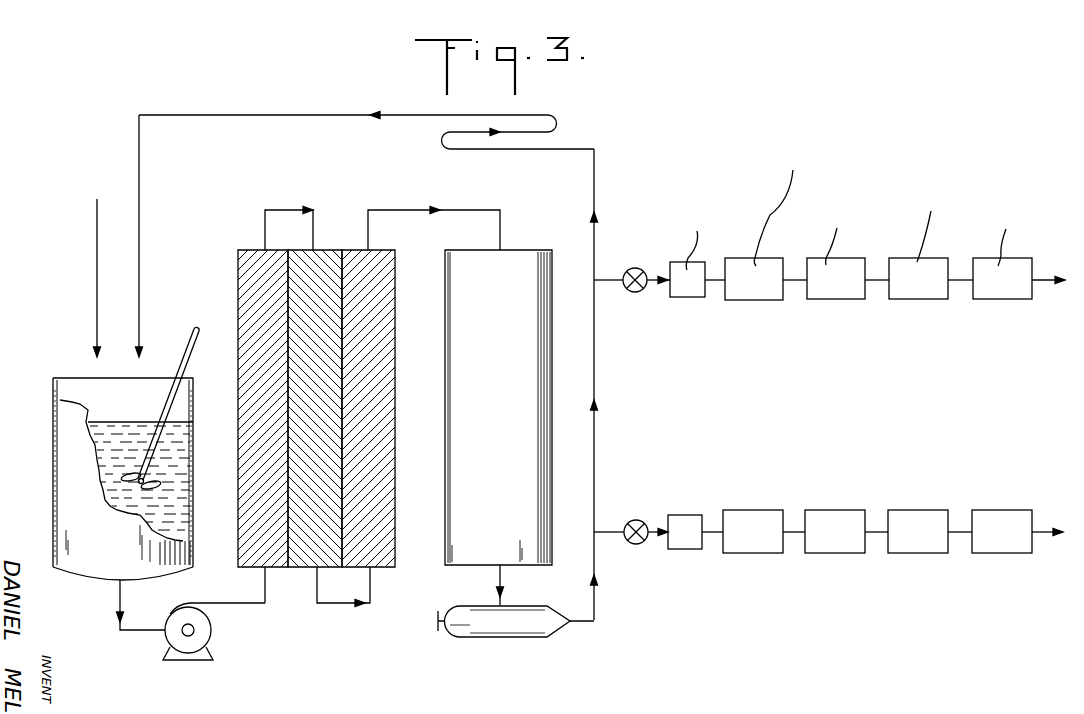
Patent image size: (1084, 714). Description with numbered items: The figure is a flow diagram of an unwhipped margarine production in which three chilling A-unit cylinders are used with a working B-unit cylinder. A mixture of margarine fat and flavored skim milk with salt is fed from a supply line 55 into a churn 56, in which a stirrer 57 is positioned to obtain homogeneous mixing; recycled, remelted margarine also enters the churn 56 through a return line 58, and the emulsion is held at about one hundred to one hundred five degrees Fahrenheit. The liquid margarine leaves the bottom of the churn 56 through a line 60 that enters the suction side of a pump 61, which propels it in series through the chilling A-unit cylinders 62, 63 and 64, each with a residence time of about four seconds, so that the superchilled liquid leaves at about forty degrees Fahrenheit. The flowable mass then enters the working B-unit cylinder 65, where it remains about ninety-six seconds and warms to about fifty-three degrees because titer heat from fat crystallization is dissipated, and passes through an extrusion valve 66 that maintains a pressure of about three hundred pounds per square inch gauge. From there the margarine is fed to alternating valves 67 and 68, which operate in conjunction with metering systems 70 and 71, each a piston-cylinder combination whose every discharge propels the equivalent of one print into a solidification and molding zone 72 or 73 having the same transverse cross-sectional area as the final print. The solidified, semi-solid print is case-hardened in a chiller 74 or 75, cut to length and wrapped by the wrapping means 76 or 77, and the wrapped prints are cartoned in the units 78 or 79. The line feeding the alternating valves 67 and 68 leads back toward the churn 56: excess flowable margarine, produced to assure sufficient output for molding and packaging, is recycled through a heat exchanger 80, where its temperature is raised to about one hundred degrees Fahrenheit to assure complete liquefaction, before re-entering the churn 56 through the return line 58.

The supply line 55 is at (97, 232).
The churn 56 is at (53, 452).
The stirrer 57 is at (190, 342).
The return line 58 is at (232, 115).
The line 60 is at (120, 606).
The pump 61 is at (172, 637).
The chilling A-unit cylinder 62 is at (272, 568).
The chilling A-unit cylinder 63 is at (322, 568).
The chilling A-unit cylinder 64 is at (384, 568).
The working B-unit cylinder 65 is at (538, 250).
The extrusion valve 66 is at (498, 640).
The alternating valve 67 is at (636, 519).
The alternating valve 68 is at (637, 268).
The metering system 70 is at (683, 297).
The metering system 71 is at (687, 519).
The solidification and molding zone 72 is at (753, 300).
The solidification and molding zone 73 is at (759, 514).
The chiller 74 is at (833, 299).
The chiller 75 is at (835, 514).
The wrapper 76 is at (909, 299).
The wrapper 77 is at (923, 514).
The cartoning unit 78 is at (991, 299).
The cartoning unit 79 is at (1003, 514).
The heat exchanger 80 is at (455, 150).